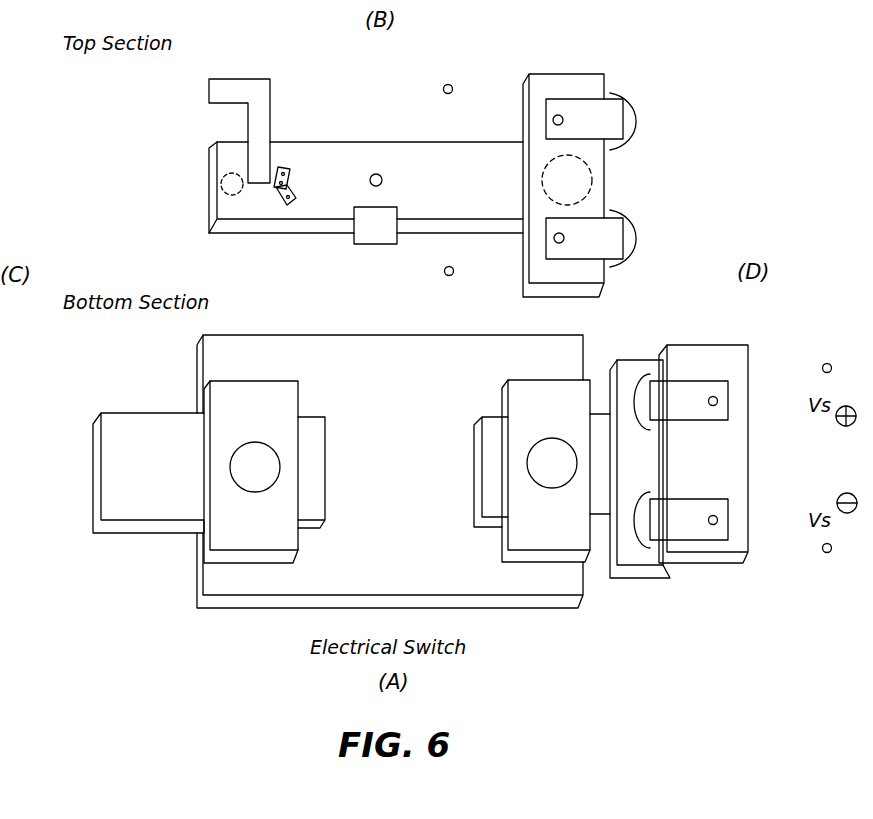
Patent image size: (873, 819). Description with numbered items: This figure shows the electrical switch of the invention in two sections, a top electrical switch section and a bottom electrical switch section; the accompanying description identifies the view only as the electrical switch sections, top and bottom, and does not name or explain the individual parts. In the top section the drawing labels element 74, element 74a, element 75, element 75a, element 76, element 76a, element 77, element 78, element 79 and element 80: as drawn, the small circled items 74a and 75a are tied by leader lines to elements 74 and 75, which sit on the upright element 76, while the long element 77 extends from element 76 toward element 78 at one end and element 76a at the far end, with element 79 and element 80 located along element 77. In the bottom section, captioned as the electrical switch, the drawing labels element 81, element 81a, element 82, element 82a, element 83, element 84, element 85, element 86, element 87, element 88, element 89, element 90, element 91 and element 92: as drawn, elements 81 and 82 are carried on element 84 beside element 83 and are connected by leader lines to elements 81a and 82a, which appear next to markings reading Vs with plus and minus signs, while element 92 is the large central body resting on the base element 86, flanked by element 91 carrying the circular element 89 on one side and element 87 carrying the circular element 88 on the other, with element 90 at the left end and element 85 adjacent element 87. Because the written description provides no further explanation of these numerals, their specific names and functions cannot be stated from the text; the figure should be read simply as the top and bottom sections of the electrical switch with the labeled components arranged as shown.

The upper contact terminal 74 is at (604, 133).
The upper terminal lead 74a is at (554, 117).
The lower contact terminal 75 is at (604, 252).
The lower terminal lead 75a is at (554, 242).
The terminal block 76 is at (605, 188).
The end of pivot bar 76a is at (208, 200).
The pivot bar 77 is at (436, 200).
The L-shaped lever 78 is at (230, 78).
The hinge connector 79 is at (293, 180).
The pivot pin 80 is at (376, 173).
The positive supply contact 81 is at (701, 416).
The positive supply lead 81a is at (718, 400).
The negative supply contact 82 is at (701, 534).
The negative supply lead 82a is at (718, 522).
The spacer block 83 is at (653, 481).
The terminal block 84 is at (718, 481).
The spring stop 85 is at (478, 438).
The base plate 86 is at (197, 575).
The right slider block 87 is at (563, 534).
The right pivot boss 88 is at (564, 476).
The left pivot boss 89 is at (267, 480).
The actuator block 90 is at (167, 484).
The left slider block 91 is at (269, 536).
The switch body 92 is at (409, 481).